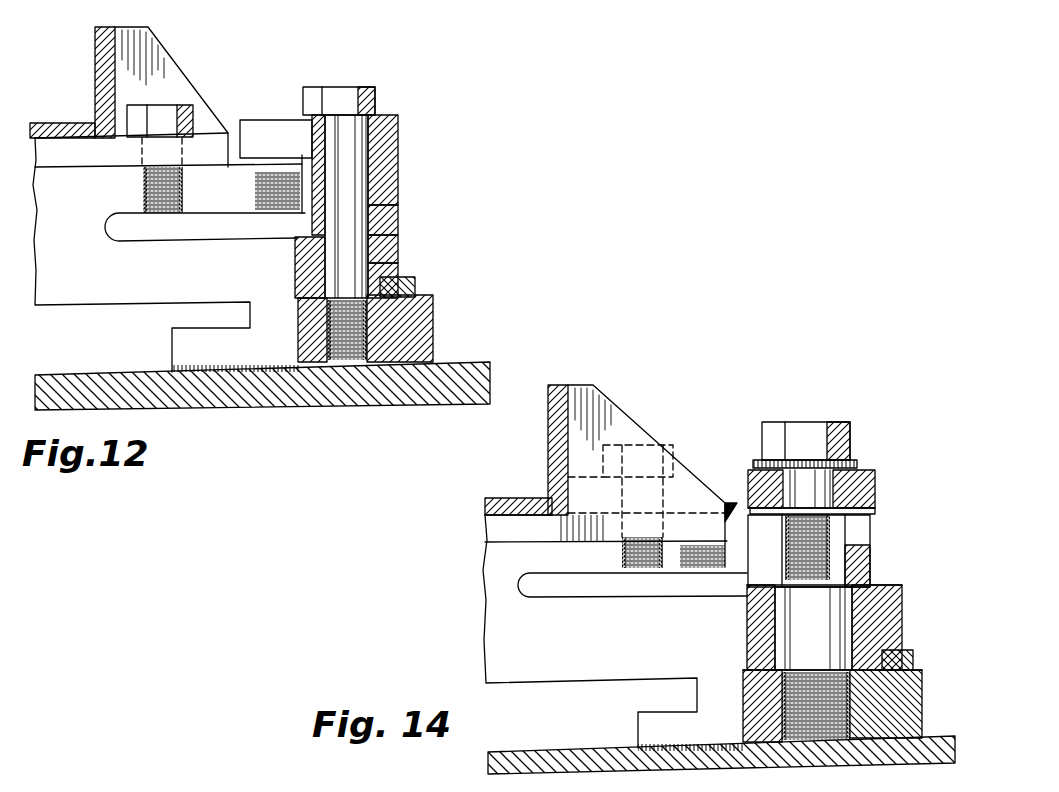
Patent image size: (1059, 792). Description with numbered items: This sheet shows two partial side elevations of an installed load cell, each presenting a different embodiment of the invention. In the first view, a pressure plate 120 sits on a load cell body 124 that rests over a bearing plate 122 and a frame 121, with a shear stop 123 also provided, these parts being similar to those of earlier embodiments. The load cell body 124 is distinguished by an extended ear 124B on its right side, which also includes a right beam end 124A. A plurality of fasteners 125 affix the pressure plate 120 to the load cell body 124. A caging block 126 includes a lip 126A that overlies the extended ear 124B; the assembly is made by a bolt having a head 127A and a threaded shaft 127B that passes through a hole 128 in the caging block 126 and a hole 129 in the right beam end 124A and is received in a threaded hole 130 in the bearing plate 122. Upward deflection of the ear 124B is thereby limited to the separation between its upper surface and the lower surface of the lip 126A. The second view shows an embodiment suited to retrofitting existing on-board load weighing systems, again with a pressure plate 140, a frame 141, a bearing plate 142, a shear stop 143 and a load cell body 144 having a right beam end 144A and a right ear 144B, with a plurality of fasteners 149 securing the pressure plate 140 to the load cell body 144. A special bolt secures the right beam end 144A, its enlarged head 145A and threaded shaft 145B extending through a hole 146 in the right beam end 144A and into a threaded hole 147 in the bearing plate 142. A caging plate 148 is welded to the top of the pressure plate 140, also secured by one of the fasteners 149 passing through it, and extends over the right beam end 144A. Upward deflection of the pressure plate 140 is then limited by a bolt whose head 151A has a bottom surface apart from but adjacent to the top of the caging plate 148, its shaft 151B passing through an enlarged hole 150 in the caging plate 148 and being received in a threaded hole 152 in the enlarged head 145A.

In FIG. 12, the pressure plate 120 is at (250, 173).
In FIG. 12, the frame 121 is at (477, 376).
In FIG. 12, the bearing plate 122 is at (437, 333).
In FIG. 12, the shear stop 123 is at (417, 280).
In FIG. 12, the load cell body 124 is at (88, 290).
In FIG. 12, the right beam end 124A is at (400, 246).
In FIG. 12, the extended ear 124B is at (285, 133).
In FIG. 12, the fasteners 125 is at (162, 113).
In FIG. 12, the caging block 126 is at (387, 146).
In FIG. 12, the lip 126A is at (318, 85).
In FIG. 12, the head 127A is at (377, 100).
In FIG. 12, the threaded shaft 127B is at (352, 187).
In FIG. 12, the hole 128 is at (372, 208).
In FIG. 12, the hole 129 is at (368, 263).
In FIG. 12, the threaded hole 130 is at (367, 323).
In FIG. 14, the pressure plate 140 is at (510, 523).
In FIG. 14, the frame 141 is at (938, 734).
In FIG. 14, the bearing plate 142 is at (922, 678).
In FIG. 14, the shear stop 143 is at (905, 652).
In FIG. 14, the load cell body 144 is at (560, 667).
In FIG. 14, the right beam end 144A is at (902, 613).
In FIG. 14, the right ear 144B is at (682, 552).
In FIG. 14, the enlarged head 145A is at (860, 565).
In FIG. 14, the threaded shaft 145B is at (793, 615).
In FIG. 14, the hole 146 is at (750, 647).
In FIG. 14, the threaded hole 147 is at (772, 710).
In FIG. 14, the caging plate 148 is at (720, 480).
In FIG. 14, the fasteners 149 is at (677, 446).
In FIG. 14, the enlarged hole 150 is at (853, 470).
In FIG. 14, the head 151A is at (837, 423).
In FIG. 14, the shaft 151B is at (867, 507).
In FIG. 14, the threaded hole 152 is at (837, 540).